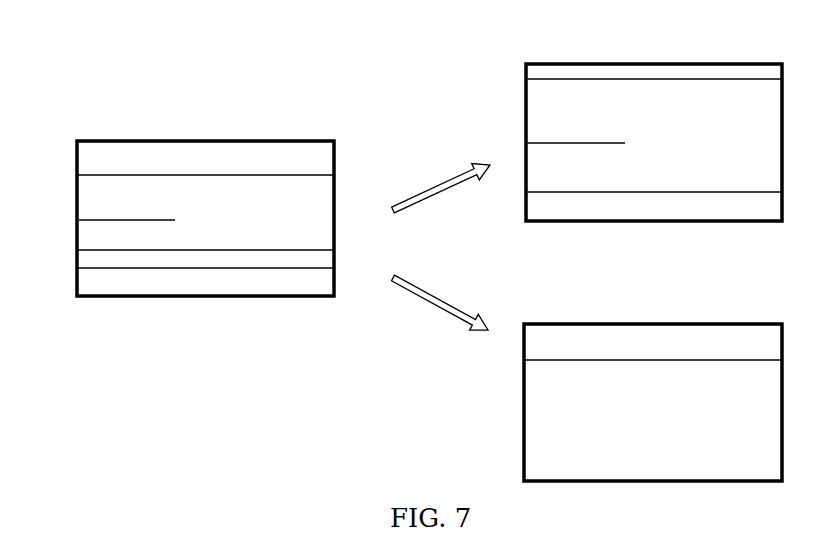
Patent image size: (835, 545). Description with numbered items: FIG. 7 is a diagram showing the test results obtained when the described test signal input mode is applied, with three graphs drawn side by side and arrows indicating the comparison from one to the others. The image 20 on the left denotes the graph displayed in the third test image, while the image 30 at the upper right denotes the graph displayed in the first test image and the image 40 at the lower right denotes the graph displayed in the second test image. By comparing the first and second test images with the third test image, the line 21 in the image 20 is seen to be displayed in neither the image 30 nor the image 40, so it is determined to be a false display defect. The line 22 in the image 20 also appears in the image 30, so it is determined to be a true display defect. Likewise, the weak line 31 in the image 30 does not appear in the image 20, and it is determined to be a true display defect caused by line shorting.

The third test image 20 is at (283, 140).
The line 21 is at (313, 249).
The line 22 is at (107, 219).
The first test image 30 is at (760, 63).
The weak line 31 is at (608, 79).
The second test image 40 is at (760, 323).